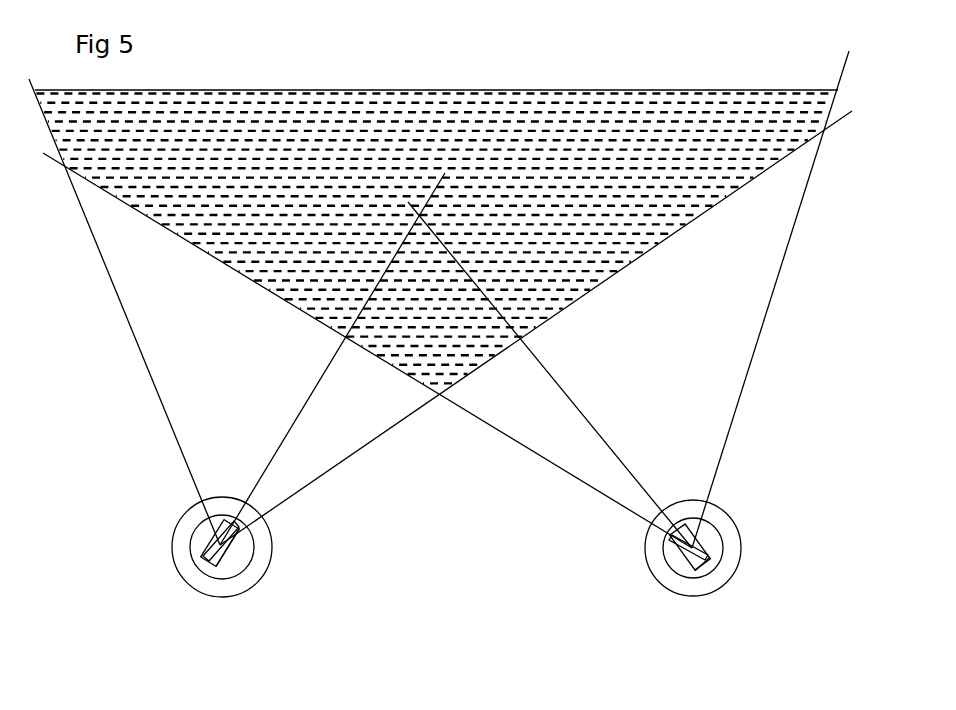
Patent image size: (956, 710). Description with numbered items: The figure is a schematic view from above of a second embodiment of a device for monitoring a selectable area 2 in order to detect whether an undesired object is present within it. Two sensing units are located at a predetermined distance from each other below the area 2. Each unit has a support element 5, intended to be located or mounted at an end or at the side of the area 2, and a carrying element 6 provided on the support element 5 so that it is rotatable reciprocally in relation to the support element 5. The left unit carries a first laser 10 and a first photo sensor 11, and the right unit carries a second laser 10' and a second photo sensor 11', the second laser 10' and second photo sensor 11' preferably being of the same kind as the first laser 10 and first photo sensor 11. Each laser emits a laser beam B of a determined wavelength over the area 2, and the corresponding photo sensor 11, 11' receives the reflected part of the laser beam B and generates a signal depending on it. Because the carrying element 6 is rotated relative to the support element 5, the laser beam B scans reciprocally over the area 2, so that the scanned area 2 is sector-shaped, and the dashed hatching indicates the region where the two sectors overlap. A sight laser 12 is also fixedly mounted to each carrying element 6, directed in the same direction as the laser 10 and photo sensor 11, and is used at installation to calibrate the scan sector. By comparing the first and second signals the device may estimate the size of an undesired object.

The area 2 is at (543, 172).
The laser beam B is at (315, 393).
The support element 5 is at (181, 561).
The carrying element 6 is at (198, 568).
The first laser 10 is at (207, 581).
The second laser 10' is at (679, 583).
The first photo sensor 11 is at (276, 585).
The second photo sensor 11' is at (753, 599).
The sight laser 12 is at (229, 553).